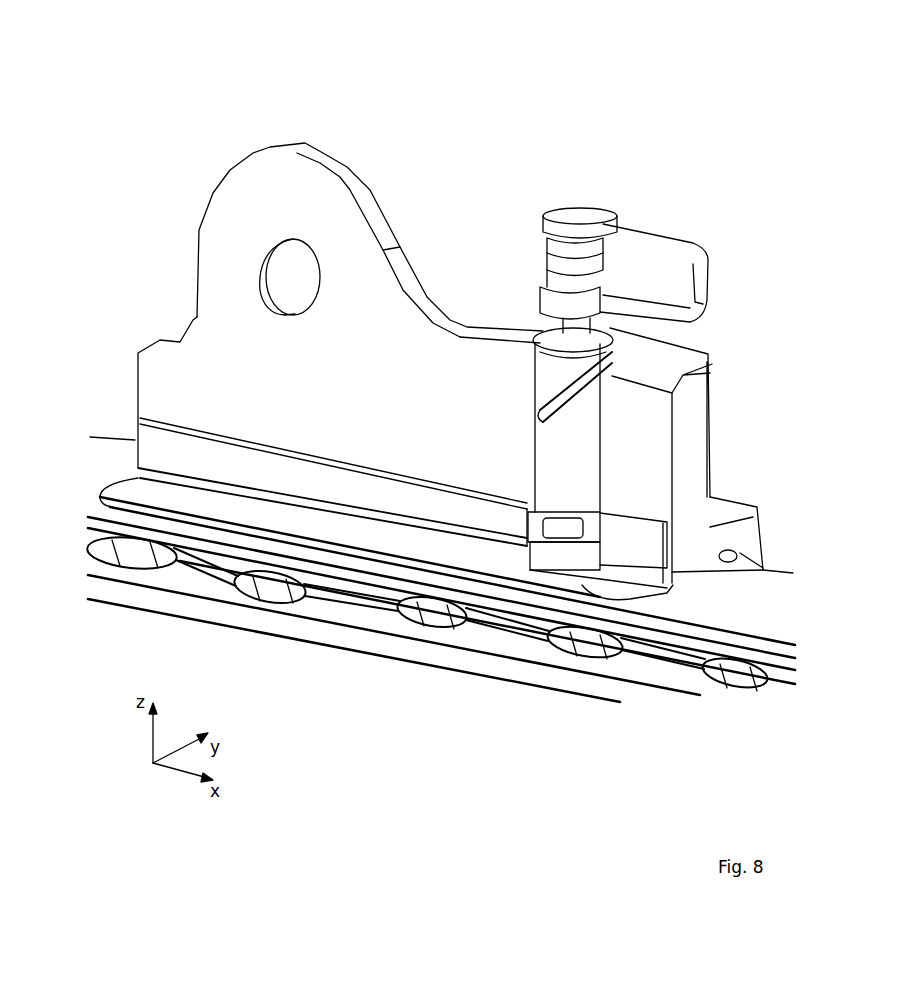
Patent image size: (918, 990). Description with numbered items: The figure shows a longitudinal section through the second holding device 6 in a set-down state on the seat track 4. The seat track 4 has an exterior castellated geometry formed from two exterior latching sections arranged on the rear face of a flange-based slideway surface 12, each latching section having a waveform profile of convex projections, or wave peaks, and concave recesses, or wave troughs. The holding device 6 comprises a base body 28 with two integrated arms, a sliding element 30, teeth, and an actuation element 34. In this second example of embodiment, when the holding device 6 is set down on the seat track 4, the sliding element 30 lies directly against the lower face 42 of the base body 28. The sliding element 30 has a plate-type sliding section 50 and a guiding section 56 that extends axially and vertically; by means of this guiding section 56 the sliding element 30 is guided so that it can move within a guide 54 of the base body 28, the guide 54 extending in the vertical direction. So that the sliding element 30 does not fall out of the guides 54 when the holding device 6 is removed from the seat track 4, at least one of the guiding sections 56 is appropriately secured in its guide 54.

The seat track 4 is at (88, 462).
The holding device 6 is at (259, 146).
The slideway surface 12 is at (106, 483).
The base body 28 is at (343, 160).
The sliding element 30 is at (688, 590).
The actuation element 34 is at (603, 200).
The lower face 42 is at (736, 553).
The sliding section 50 is at (198, 503).
The guide 54 is at (150, 427).
The guiding section 56 is at (170, 448).